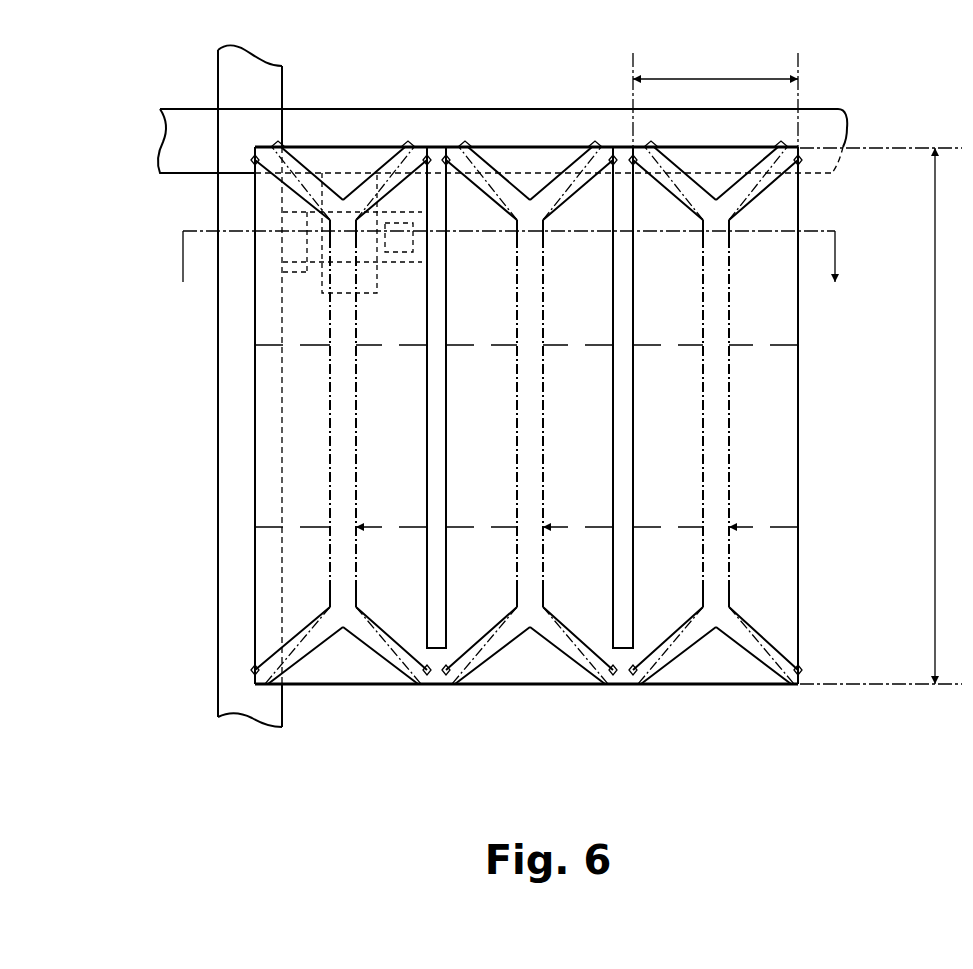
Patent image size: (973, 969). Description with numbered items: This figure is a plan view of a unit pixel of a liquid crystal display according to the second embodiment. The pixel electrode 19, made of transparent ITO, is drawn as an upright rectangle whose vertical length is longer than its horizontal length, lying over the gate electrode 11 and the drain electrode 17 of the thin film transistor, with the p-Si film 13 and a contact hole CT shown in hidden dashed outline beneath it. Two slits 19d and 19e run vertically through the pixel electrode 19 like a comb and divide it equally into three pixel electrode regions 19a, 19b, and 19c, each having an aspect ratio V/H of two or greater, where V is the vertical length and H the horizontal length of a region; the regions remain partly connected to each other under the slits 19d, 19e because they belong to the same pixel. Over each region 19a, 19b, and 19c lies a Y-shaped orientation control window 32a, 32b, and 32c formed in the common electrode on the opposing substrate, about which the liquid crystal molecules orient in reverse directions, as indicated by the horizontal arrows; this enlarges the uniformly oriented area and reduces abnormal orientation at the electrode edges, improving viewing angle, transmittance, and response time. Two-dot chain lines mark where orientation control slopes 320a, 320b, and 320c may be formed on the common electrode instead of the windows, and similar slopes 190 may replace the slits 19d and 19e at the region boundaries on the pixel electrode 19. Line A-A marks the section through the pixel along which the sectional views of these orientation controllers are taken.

The gate electrode 11 is at (816, 109).
The p-Si film 13 is at (397, 205).
The drain electrode 17 is at (216, 200).
The pixel electrode 19 is at (520, 670).
The pixel electrode region 19a is at (302, 517).
The pixel electrode region 19b is at (580, 593).
The pixel electrode region 19c is at (765, 402).
The slit 19d is at (437, 650).
The slit 19e is at (623, 648).
The orientation control slope 190 is at (556, 709).
The orientation control window 32a is at (338, 602).
The orientation control window 32b is at (535, 505).
The orientation control window 32c is at (722, 323).
The slope 320a is at (263, 415).
The slope 320b is at (693, 415).
The slope 320c is at (783, 415).
The contact hole CT is at (413, 222).
The horizontal length H is at (715, 97).
The vertical length V is at (881, 416).
The section line A- A is at (508, 273).